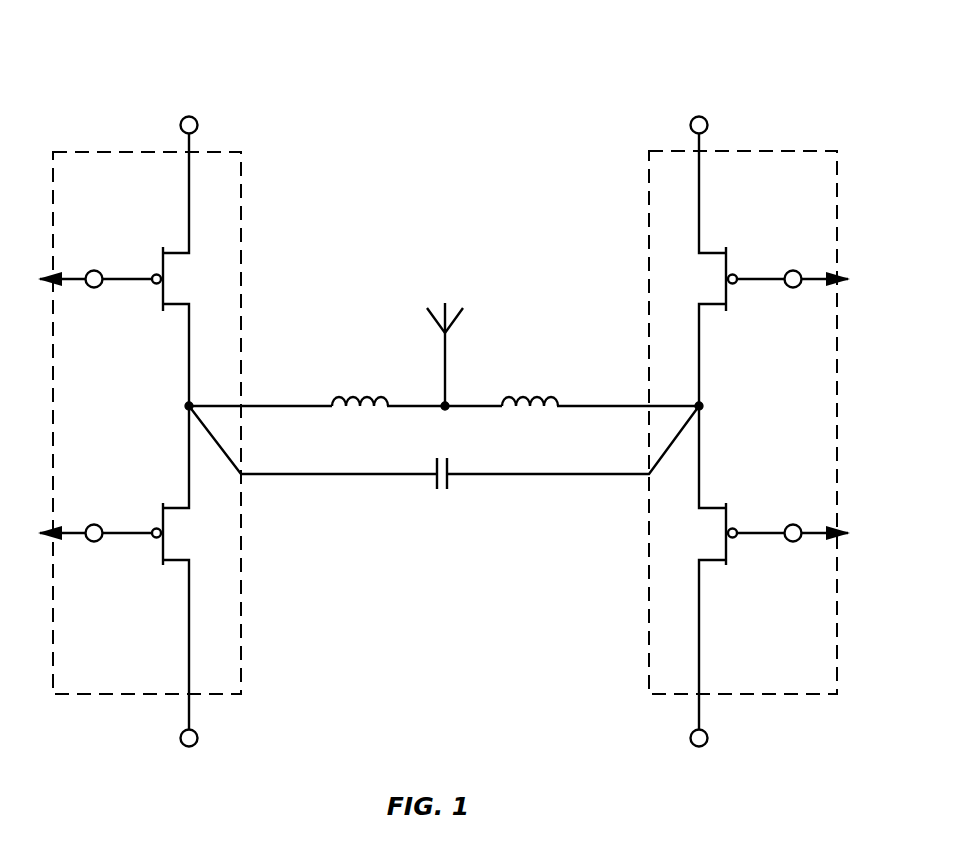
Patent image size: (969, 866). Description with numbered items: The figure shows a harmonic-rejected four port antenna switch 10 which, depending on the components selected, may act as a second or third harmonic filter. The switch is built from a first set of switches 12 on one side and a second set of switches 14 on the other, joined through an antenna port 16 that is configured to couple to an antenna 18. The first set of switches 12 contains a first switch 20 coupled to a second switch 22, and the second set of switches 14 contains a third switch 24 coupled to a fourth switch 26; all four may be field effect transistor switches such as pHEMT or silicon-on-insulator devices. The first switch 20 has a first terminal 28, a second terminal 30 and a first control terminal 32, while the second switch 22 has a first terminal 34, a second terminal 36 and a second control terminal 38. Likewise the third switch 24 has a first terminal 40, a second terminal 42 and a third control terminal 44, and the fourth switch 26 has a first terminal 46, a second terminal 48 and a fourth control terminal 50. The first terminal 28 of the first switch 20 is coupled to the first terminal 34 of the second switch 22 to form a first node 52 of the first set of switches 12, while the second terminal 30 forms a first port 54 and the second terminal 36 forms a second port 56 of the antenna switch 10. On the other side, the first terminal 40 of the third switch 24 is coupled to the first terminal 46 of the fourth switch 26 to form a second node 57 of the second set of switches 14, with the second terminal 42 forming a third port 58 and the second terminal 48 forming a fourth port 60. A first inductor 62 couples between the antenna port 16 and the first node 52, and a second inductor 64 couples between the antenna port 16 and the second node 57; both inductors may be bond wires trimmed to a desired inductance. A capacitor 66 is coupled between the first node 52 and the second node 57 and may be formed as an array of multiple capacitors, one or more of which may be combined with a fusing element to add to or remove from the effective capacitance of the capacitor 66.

The harmonic-rejected antenna switch 10 is at (519, 70).
The first set of switches 12 is at (71, 684).
The second set of switches 14 is at (787, 684).
The antenna port 16 is at (447, 404).
The antenna 18 is at (447, 347).
The first switch 20 is at (114, 269).
The second switch 22 is at (114, 568).
The third switch 24 is at (773, 269).
The fourth switch 26 is at (773, 568).
The first terminal 28 is at (173, 308).
The second terminal 30 is at (177, 248).
The first control terminal 32 is at (129, 275).
The first terminal 34 is at (176, 505).
The second terminal 36 is at (173, 562).
The second control terminal 38 is at (129, 530).
The first terminal 40 is at (716, 308).
The second terminal 42 is at (716, 248).
The third control terminal 44 is at (758, 275).
The first terminal 46 is at (713, 505).
The second terminal 48 is at (716, 562).
The fourth control terminal 50 is at (760, 530).
The first node 52 is at (189, 405).
The first port 54 is at (197, 123).
The second port 56 is at (197, 741).
The second node 57 is at (699, 405).
The third port 58 is at (707, 123).
The fourth port 60 is at (707, 741).
The first inductor 62 is at (352, 411).
The second inductor 64 is at (523, 411).
The capacitor 66 is at (448, 489).